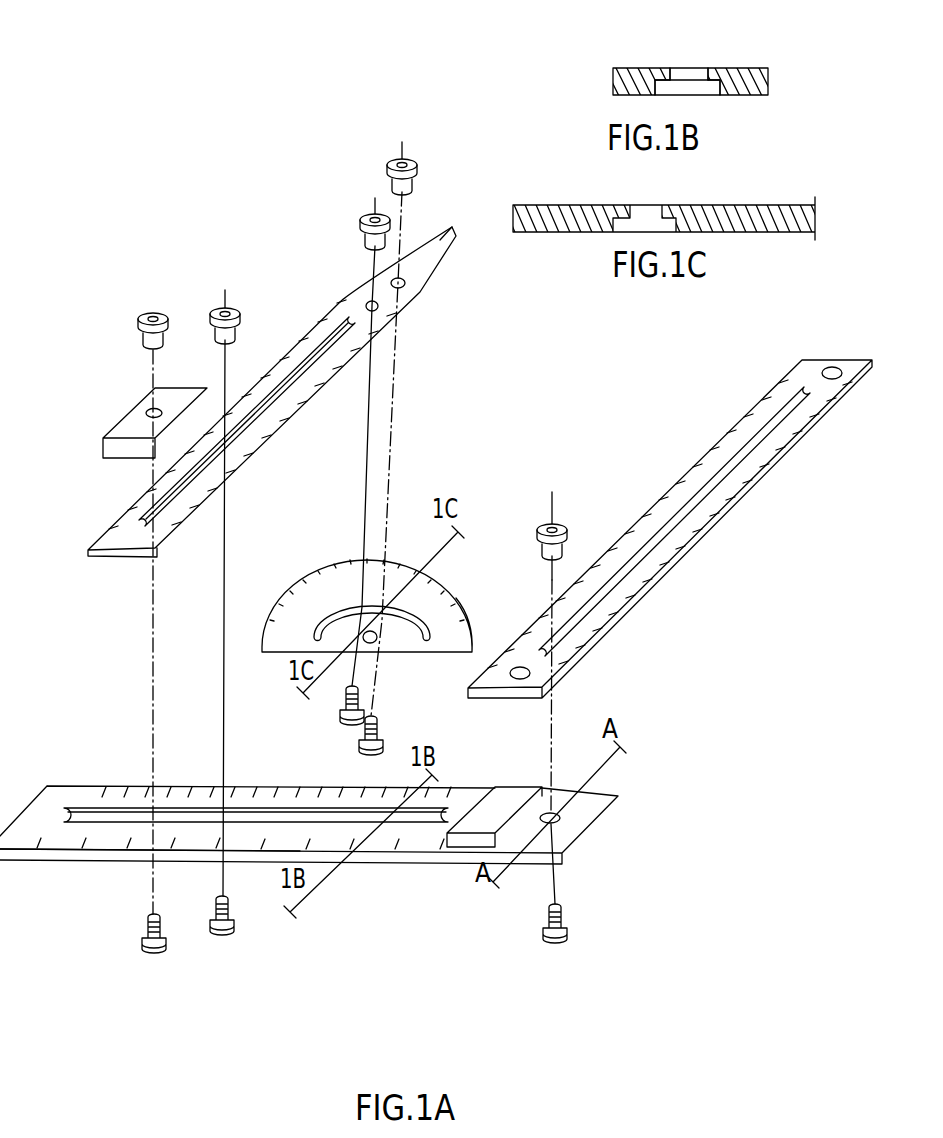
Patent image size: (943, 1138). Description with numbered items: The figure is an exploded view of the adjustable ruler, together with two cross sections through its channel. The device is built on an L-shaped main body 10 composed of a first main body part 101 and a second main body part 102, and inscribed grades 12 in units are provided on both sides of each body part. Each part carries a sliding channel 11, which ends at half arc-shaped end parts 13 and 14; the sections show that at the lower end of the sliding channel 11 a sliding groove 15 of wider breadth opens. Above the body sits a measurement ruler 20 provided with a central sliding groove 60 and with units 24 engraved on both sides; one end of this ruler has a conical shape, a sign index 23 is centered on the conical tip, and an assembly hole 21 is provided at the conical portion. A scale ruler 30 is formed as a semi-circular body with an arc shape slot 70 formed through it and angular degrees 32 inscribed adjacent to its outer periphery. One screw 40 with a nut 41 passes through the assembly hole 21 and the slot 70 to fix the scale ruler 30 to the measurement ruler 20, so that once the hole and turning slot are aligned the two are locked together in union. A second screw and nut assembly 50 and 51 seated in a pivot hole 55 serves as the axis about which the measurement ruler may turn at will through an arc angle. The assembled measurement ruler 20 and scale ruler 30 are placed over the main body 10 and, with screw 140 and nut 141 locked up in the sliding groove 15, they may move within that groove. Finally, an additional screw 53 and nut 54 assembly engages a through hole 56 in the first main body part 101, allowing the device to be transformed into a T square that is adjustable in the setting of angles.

In FIG. 1A, the main body 10 is at (610, 841).
In FIG. 1A, the first main body part 101 is at (411, 853).
In FIG. 1A, the sliding channel 11 is at (267, 816).
In FIG. 1B, the sliding channel 11 is at (702, 67).
In FIG. 1A, the inscribed grades 12 is at (690, 472).
In FIG. 1A, the second main body part 102 is at (755, 410).
In FIG. 1A, the half arc-shaped end part 13 is at (463, 790).
In FIG. 1A, the half arc-shaped end part 14 is at (67, 810).
In FIG. 1B, the sliding groove 15 is at (713, 90).
In FIG. 1A, the measurement ruler 20 is at (347, 299).
In FIG. 1A, the assembly hole 21 is at (425, 297).
In FIG. 1A, the sign index 23 is at (449, 226).
In FIG. 1A, the units 24 is at (108, 533).
In FIG. 1A, the scale ruler 30 is at (447, 593).
In FIG. 1A, the scale of protractor 32 is at (303, 586).
In FIG. 1A, the screw 40 is at (358, 753).
In FIG. 1A, the nut 41 is at (413, 161).
In FIG. 1A, the second screw 50 is at (340, 715).
In FIG. 1A, the second nut 51 is at (362, 218).
In FIG. 1A, the additional screw 53 is at (565, 942).
In FIG. 1A, the nut 54 is at (567, 523).
In FIG. 1A, the pivot hole 55 is at (378, 308).
In FIG. 1A, the through hole 56 is at (557, 815).
In FIG. 1A, the central sliding groove 60 is at (318, 351).
In FIG. 1A, the arc shape slot 70 is at (432, 637).
In FIG. 1A, the screw 140 is at (227, 938).
In FIG. 1A, the nut 141 is at (237, 305).